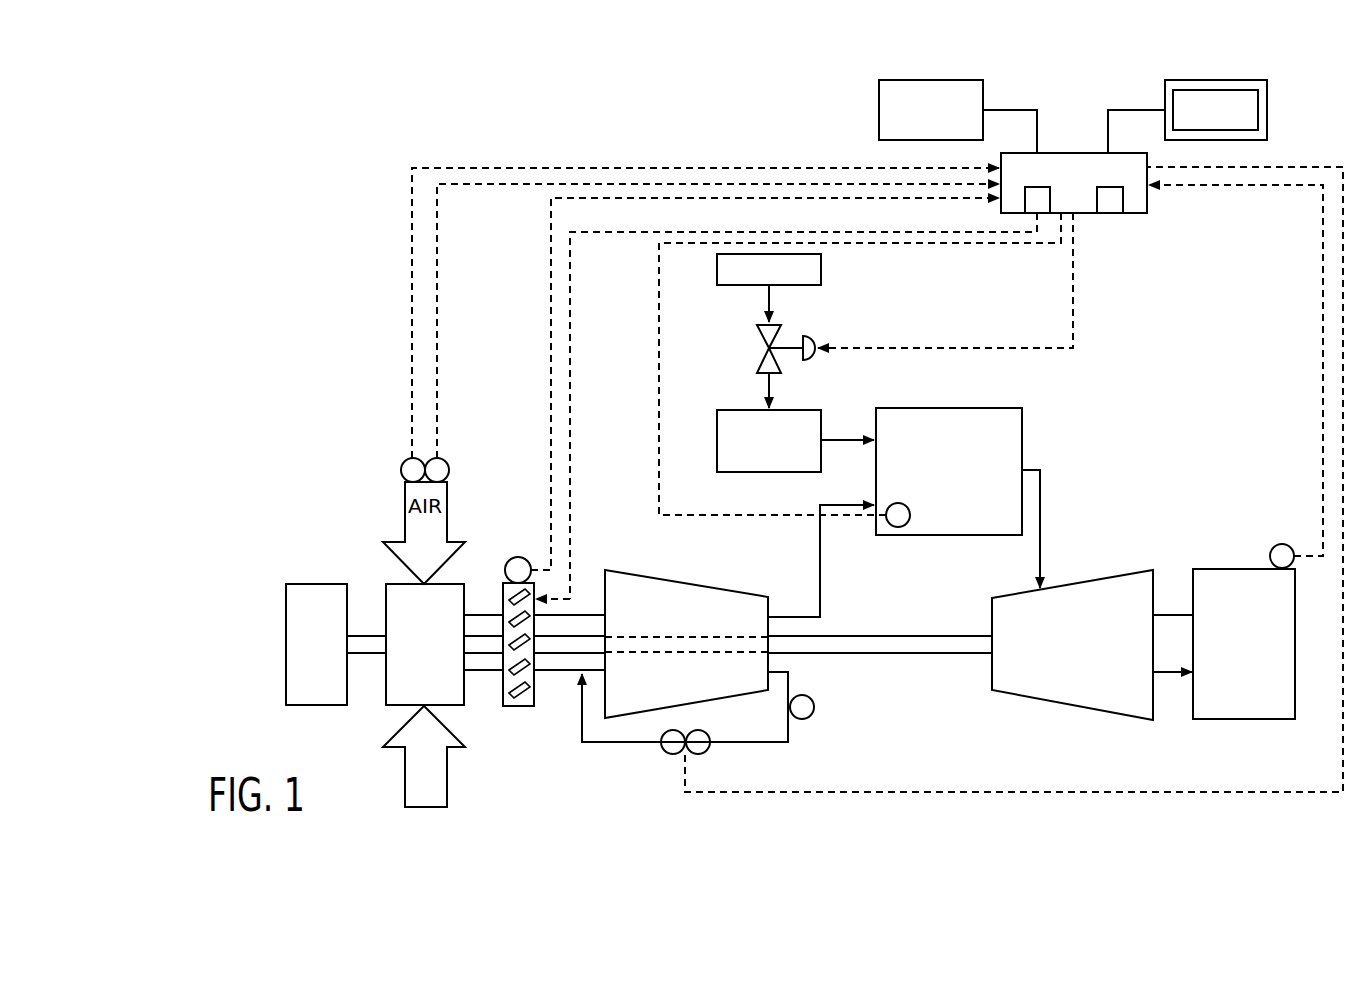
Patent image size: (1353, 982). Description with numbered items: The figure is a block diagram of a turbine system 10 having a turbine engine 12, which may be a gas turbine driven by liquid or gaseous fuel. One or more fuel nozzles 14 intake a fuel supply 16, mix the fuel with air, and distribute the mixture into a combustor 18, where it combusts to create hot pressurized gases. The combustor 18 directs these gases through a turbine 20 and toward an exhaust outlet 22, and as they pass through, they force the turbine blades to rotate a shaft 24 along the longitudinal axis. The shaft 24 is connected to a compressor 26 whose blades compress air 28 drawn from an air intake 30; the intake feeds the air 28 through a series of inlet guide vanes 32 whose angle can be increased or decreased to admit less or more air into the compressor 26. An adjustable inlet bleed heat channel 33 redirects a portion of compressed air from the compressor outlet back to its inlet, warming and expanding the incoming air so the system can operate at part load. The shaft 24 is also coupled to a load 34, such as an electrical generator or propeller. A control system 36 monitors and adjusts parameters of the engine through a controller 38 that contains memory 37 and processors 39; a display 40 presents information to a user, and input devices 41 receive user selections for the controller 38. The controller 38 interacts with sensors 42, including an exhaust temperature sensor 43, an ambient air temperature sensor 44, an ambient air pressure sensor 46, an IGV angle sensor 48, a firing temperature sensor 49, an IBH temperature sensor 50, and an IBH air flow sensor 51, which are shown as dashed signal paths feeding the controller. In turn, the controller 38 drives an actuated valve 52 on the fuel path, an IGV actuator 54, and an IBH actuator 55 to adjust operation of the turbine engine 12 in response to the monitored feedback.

The turbine system 10 is at (624, 773).
The turbine engine 12 is at (1072, 382).
The fuel nozzle 14 is at (717, 440).
The fuel supply 16 is at (821, 270).
The combustor 18 is at (945, 408).
The turbine 20 is at (1072, 584).
The exhaust outlet 22 is at (1243, 569).
The shaft 24 is at (880, 655).
The compressor 26 is at (688, 584).
The air 28 is at (447, 780).
The air intake 30 is at (400, 708).
The inlet guide vanes 32 is at (536, 694).
The inlet bleed heat channel 33 is at (790, 732).
The load 34 is at (314, 584).
The control system 36 is at (585, 155).
The memory 37 is at (1025, 197).
The controller 38 is at (1048, 173).
The processor 39 is at (1118, 208).
The display 40 is at (1267, 110).
The input device 41 is at (879, 108).
The sensors 42 is at (827, 615).
The exhaust temperature sensor 43 is at (1290, 546).
The ambient air temperature sensor 44 is at (444, 460).
The ambient air pressure sensor 46 is at (406, 460).
The IGV angle sensor 48 is at (505, 570).
The firing temperature sensor 49 is at (905, 527).
The IBH temperature sensor 50 is at (665, 756).
The IBH air flow sensor 51 is at (705, 732).
The actuated valve 52 is at (757, 338).
The IGV actuator 54 is at (545, 597).
The IBH actuator 55 is at (814, 703).